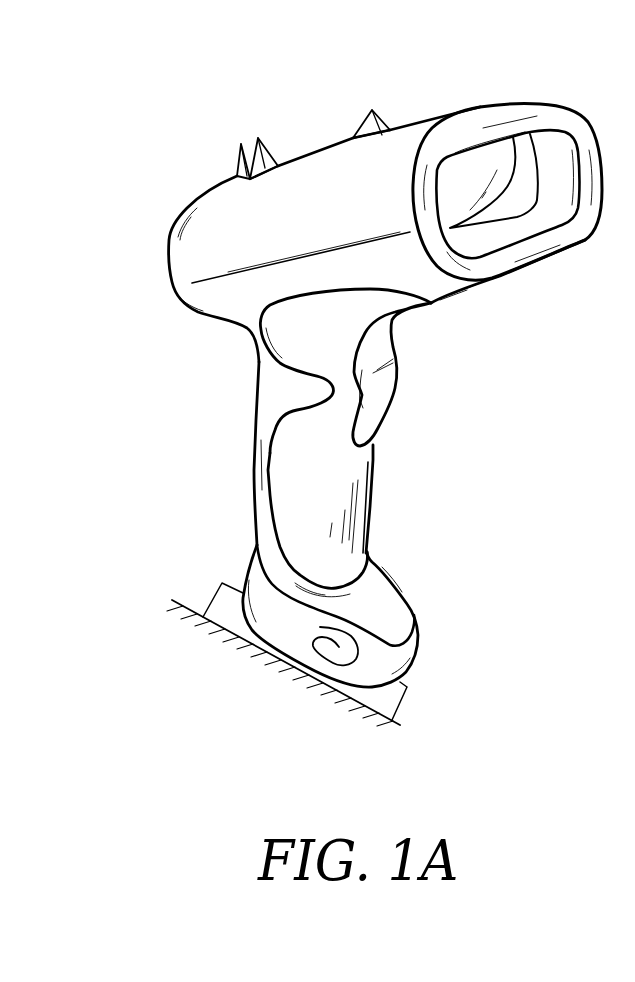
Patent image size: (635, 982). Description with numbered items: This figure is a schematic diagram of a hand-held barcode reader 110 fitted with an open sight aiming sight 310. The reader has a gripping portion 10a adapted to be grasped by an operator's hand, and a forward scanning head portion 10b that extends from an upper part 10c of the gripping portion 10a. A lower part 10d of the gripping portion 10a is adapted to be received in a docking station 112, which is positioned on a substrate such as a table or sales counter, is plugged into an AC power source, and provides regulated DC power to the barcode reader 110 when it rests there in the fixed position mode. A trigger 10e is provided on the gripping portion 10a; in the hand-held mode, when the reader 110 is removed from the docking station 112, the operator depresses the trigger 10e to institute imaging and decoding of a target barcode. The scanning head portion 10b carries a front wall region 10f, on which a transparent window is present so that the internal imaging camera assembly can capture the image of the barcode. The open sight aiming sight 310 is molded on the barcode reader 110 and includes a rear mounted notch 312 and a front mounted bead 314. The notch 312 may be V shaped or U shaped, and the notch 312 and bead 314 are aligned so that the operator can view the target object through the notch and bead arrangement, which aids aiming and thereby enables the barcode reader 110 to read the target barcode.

The hand-held barcode reader 110 is at (329, 353).
The gripping portion 10a is at (293, 530).
The scanning head portion 10b is at (225, 186).
The upper part of the gripping portion 10c is at (270, 380).
The lower part of the gripping portion 10d is at (417, 626).
The trigger 10e is at (389, 397).
The front wall region 10f is at (535, 105).
The open sight aiming sight 310 is at (280, 99).
The rear mounted notch 312 is at (238, 142).
The front mounted bead 314 is at (370, 107).
The docking station 112 is at (402, 685).